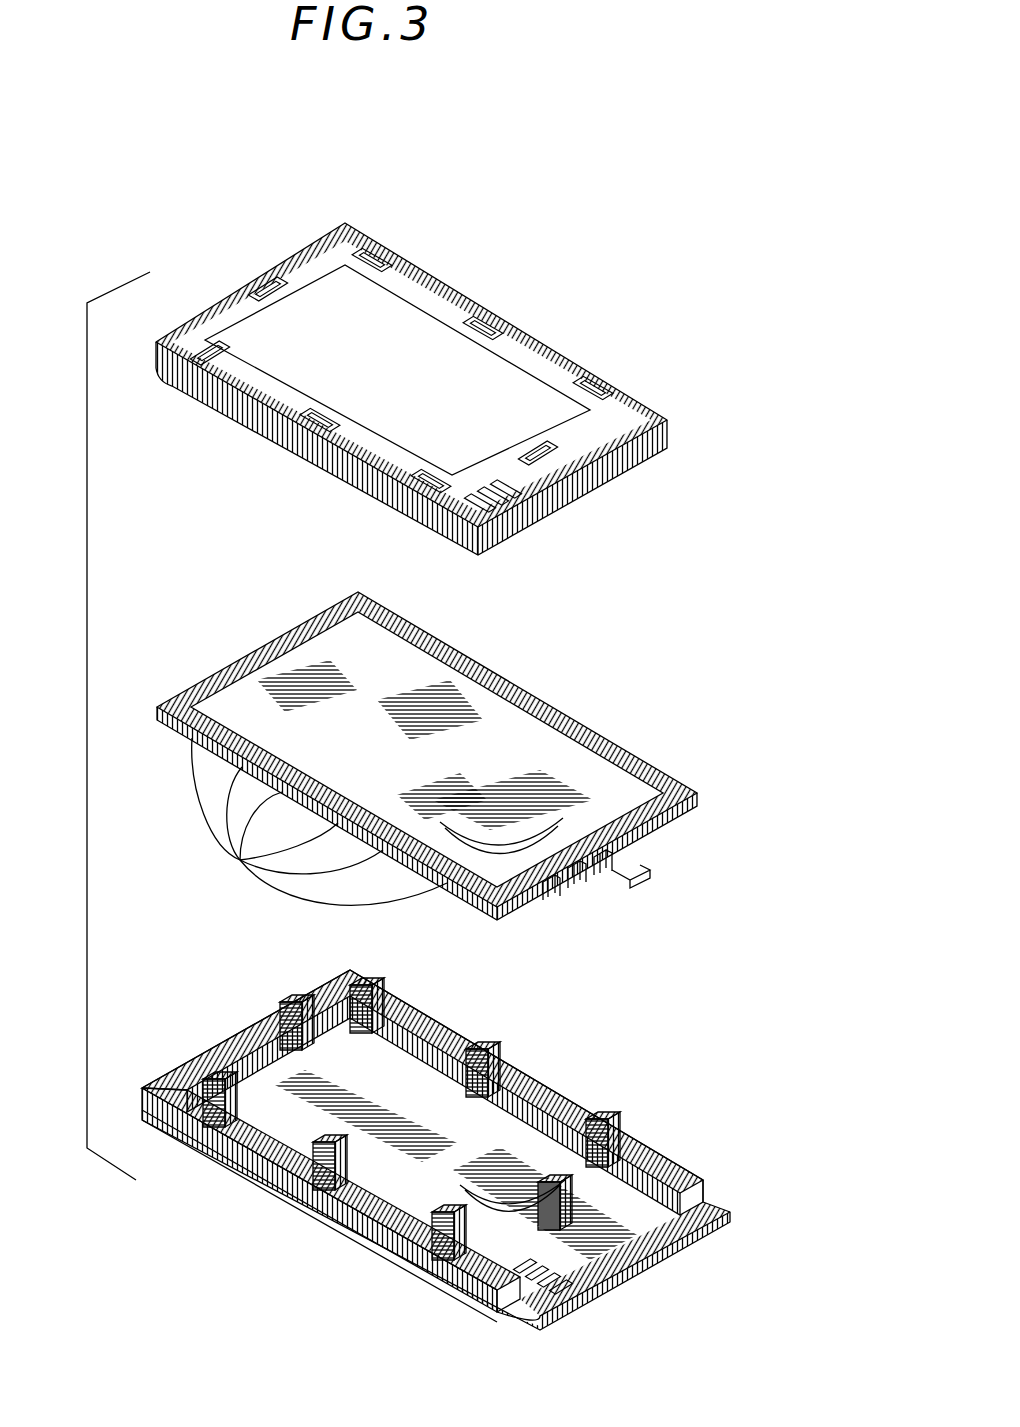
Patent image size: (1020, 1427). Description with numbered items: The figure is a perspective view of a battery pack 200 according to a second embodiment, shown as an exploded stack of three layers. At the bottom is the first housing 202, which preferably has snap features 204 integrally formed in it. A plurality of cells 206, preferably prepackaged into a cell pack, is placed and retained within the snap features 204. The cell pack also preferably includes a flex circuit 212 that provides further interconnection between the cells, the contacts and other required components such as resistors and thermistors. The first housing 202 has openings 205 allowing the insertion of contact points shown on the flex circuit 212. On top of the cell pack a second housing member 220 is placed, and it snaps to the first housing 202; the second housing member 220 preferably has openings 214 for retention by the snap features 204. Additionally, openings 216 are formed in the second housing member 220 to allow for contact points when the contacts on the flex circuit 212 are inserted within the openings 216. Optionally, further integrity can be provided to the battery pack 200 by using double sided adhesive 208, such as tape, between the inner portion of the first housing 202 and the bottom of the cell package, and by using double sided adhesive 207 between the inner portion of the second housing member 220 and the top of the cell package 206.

The battery pack 200 is at (650, 172).
The first housing 202 is at (640, 1235).
The snap features 204 is at (603, 1120).
The openings 205 is at (553, 1277).
The cells 206 is at (319, 821).
The double sided adhesive 207 is at (543, 750).
The double sided adhesive 208 is at (500, 1150).
The flex circuit 212 is at (648, 876).
The openings 214 is at (193, 362).
The openings 216 is at (540, 490).
The second housing member 220 is at (650, 420).